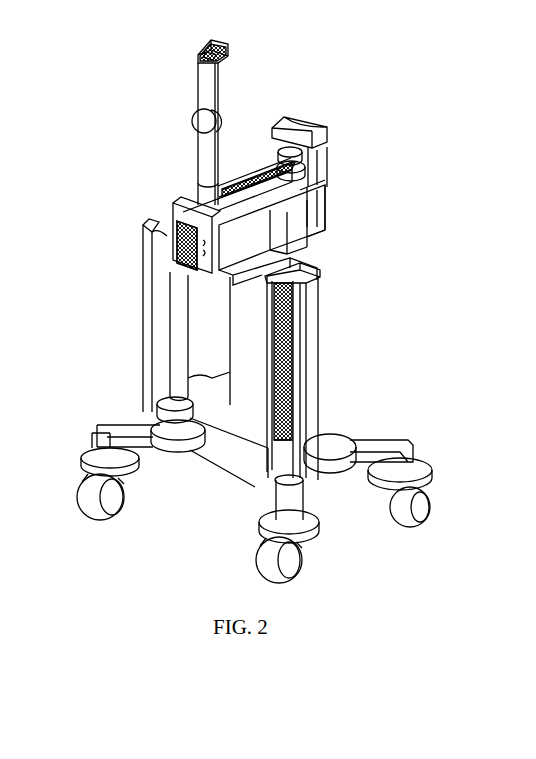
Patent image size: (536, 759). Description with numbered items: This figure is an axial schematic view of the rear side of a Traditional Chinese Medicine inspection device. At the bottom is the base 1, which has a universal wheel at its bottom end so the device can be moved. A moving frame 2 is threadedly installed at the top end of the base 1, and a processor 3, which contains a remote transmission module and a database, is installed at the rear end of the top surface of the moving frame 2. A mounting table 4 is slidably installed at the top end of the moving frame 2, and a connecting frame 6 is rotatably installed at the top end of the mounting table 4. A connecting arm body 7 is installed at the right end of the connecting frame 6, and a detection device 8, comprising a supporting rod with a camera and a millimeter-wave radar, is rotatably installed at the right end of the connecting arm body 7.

The base 1 is at (318, 330).
The moving frame 2 is at (228, 323).
The processor 3 is at (175, 242).
The mounting table 4 is at (322, 168).
The connecting frame 6 is at (313, 198).
The connecting arm body 7 is at (200, 198).
The detection device 8 is at (198, 102).